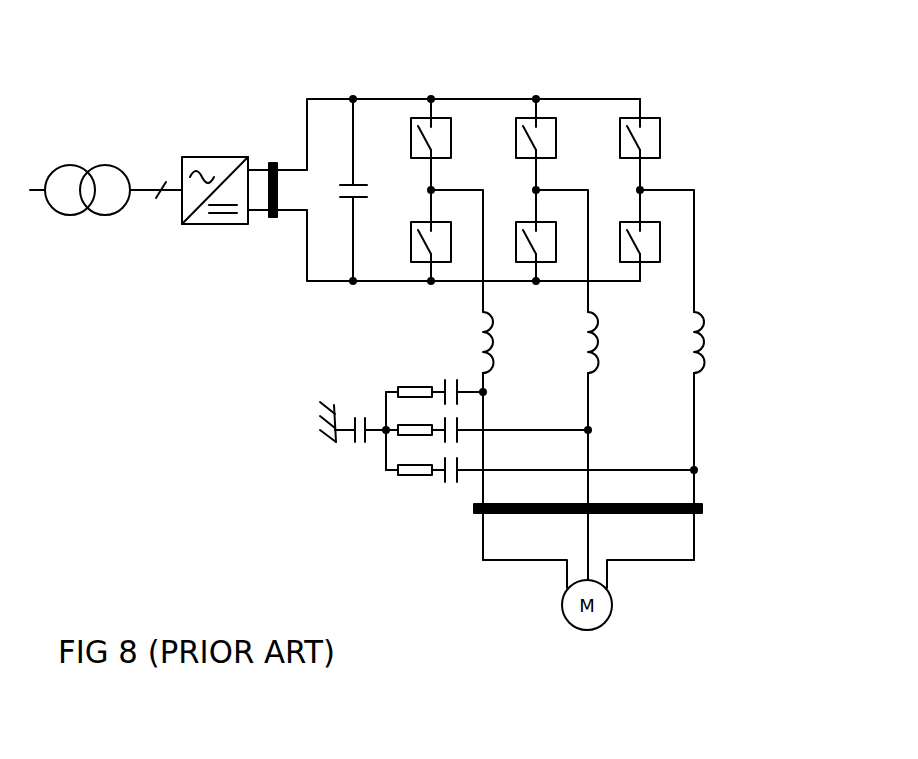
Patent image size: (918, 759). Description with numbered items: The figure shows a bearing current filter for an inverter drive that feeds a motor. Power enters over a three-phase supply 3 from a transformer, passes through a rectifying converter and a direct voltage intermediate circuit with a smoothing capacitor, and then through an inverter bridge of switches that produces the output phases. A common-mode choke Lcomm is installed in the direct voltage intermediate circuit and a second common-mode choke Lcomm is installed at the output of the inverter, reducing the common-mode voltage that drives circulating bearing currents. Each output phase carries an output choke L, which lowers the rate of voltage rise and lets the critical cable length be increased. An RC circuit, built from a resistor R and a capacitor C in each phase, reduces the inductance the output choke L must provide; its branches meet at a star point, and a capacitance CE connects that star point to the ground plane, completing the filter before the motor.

The three-phase supply line 3 is at (156, 178).
The common-mode choke Lcomm is at (270, 160).
The output choke L is at (603, 342).
The capacitance CE is at (358, 415).
The resistor of the RC circuit R is at (415, 411).
The capacitor of the RC circuit C is at (449, 414).